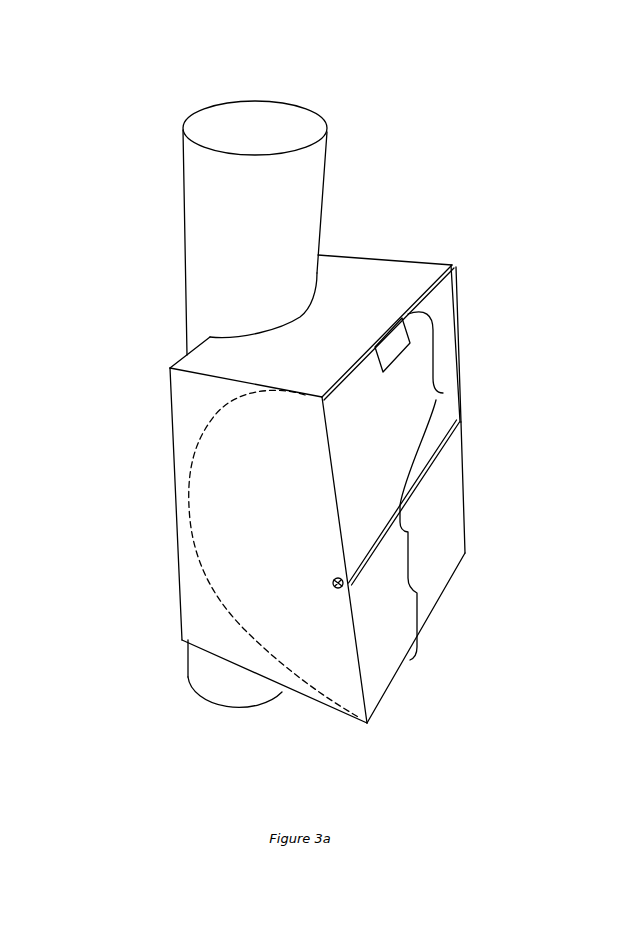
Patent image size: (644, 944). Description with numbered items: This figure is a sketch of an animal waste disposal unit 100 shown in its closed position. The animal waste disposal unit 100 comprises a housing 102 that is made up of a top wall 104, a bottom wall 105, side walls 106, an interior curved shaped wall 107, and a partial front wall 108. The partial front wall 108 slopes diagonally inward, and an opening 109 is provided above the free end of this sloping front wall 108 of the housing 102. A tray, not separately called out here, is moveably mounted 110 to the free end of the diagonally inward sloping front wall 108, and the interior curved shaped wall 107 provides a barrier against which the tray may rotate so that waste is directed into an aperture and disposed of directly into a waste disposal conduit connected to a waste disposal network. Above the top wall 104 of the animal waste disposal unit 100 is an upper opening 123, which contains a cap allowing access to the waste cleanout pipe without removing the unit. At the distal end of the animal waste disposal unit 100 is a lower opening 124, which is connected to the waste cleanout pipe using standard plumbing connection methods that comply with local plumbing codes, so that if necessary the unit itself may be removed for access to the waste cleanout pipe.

The animal waste disposal unit 100 is at (150, 135).
The housing 102 is at (377, 219).
The top wall 104 is at (370, 295).
The bottom wall 105 is at (323, 708).
The side walls 106 is at (458, 333).
The interior curved shaped wall 107 is at (218, 590).
The partial front wall 108 is at (430, 550).
The opening 109 is at (440, 393).
The moveable mounting 110 is at (460, 423).
The upper opening 123 is at (251, 110).
The lower opening 124 is at (218, 720).